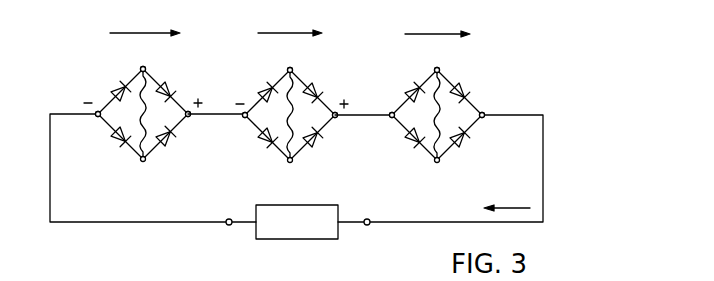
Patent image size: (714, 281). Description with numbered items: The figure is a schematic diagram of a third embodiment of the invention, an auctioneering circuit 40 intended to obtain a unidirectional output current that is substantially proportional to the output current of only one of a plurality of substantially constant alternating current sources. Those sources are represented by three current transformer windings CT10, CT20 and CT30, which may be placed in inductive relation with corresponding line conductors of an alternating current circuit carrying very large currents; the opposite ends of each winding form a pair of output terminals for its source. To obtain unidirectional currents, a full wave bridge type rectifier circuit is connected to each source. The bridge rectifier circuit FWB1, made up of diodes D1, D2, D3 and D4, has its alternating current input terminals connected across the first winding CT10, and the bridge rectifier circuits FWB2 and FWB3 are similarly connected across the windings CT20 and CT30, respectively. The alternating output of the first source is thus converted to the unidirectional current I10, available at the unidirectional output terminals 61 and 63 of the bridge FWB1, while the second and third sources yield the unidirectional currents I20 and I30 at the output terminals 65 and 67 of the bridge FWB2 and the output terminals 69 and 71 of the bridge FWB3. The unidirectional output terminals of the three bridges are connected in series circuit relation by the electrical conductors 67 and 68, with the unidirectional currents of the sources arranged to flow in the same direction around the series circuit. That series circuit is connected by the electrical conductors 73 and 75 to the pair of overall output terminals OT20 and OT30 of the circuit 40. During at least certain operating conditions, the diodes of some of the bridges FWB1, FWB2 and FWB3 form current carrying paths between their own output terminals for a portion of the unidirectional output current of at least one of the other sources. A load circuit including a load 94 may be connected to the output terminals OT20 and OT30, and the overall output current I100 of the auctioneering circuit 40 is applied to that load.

The auctioneering circuit 40 is at (90, 201).
The unidirectional output terminal 61 is at (96, 118).
The unidirectional output terminal 63 is at (186, 118).
The unidirectional output terminal 65 is at (244, 119).
The unidirectional output terminal / electrical conductor 67 is at (216, 113).
The electrical conductor 68 is at (364, 114).
The unidirectional output terminal 69 is at (391, 119).
The unidirectional output terminal 71 is at (483, 119).
The electrical conductor 73 is at (50, 164).
The electrical conductor 75 is at (543, 176).
The load 94 is at (290, 240).
The diode D1 is at (121, 83).
The diode D2 is at (121, 146).
The diode D3 is at (170, 85).
The diode D4 is at (172, 141).
The current transformer winding CT10 is at (162, 58).
The current transformer winding CT20 is at (310, 58).
The current transformer winding CT30 is at (465, 60).
The unidirectional output current I10 is at (145, 22).
The unidirectional output current I20 is at (290, 22).
The unidirectional output current I30 is at (437, 22).
The output current I100 is at (481, 210).
The output terminal OT20 is at (228, 225).
The output terminal OT30 is at (367, 225).
The full wave bridge rectifier circuit FWB1 is at (168, 201).
The full wave bridge rectifier circuit FWB2 is at (322, 199).
The full wave bridge rectifier circuit FWB3 is at (470, 199).